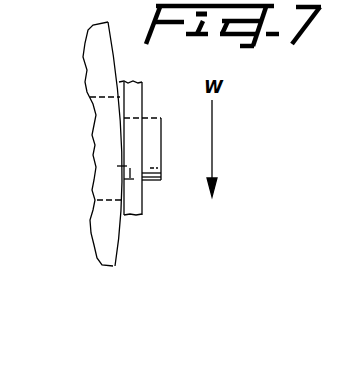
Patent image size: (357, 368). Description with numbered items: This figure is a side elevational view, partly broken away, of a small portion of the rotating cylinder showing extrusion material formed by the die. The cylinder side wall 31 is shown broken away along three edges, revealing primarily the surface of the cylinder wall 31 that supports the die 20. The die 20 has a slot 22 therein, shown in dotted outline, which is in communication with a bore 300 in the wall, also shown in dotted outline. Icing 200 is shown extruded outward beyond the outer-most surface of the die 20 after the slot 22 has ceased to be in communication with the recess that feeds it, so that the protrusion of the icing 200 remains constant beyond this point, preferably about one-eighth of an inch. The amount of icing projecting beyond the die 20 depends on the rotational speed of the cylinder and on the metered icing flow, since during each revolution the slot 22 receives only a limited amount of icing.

The bore 300 is at (97, 105).
The die 20 is at (142, 198).
The icing 200 is at (152, 124).
The cylinder side wall 31 is at (98, 163).
The slot 22 is at (119, 165).